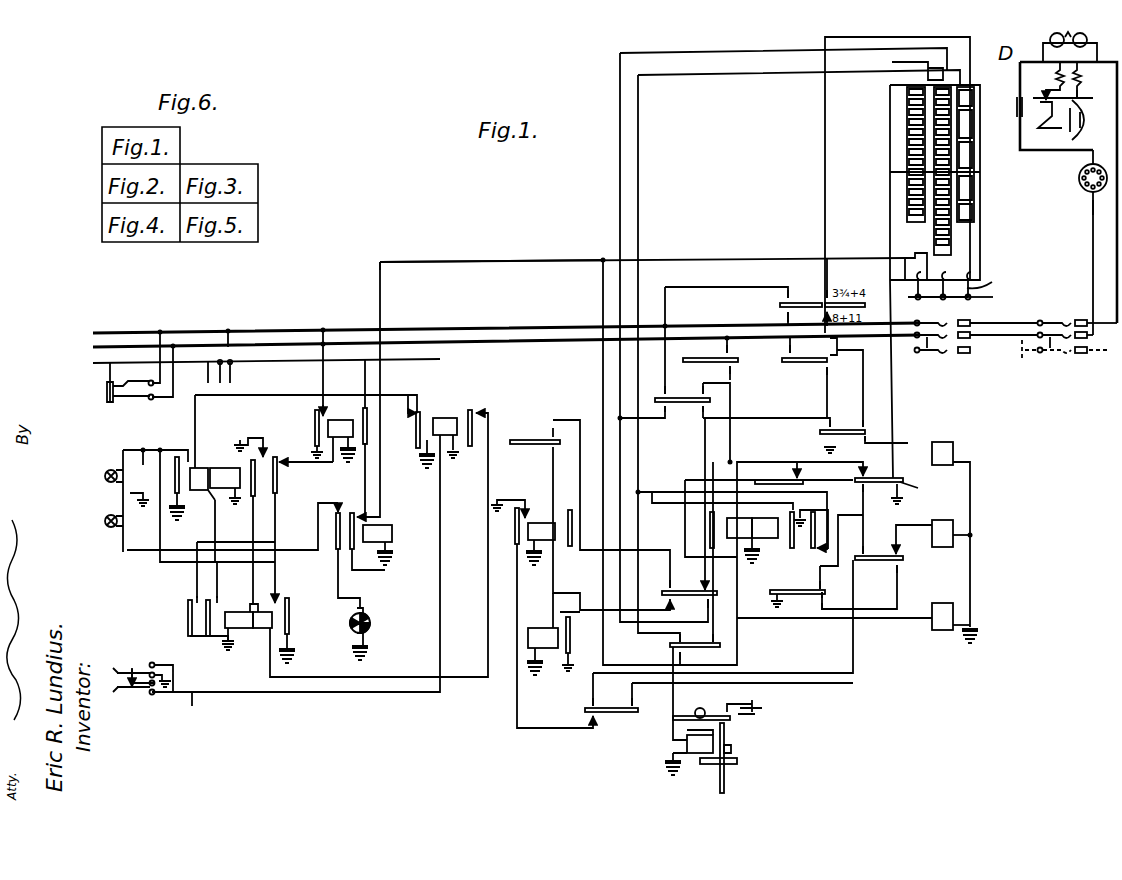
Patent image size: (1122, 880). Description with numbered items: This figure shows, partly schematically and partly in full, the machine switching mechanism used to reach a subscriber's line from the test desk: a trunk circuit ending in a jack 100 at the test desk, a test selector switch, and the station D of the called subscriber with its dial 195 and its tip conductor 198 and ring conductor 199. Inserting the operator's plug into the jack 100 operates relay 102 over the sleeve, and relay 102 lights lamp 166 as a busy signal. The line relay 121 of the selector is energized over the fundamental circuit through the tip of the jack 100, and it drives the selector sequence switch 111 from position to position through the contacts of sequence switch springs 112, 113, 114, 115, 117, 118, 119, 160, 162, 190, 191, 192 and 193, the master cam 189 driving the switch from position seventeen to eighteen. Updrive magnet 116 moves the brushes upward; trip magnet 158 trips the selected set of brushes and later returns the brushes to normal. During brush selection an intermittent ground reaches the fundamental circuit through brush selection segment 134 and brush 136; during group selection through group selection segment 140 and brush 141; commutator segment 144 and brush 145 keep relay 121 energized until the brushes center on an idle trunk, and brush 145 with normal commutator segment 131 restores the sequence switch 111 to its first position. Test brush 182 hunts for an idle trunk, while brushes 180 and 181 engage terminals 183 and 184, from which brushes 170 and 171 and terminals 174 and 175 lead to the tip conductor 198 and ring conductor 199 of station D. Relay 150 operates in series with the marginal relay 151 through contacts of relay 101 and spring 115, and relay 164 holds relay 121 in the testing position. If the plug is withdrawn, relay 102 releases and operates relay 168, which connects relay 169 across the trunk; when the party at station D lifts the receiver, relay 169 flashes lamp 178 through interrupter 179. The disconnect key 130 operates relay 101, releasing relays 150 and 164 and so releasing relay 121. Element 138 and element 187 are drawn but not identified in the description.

The jack 100 is at (112, 403).
The relay 101 is at (443, 413).
The relay 102 is at (215, 476).
The sequence switch 111 is at (687, 745).
The sequence switch spring 112 is at (798, 485).
The sequence switch spring 113 is at (672, 645).
The sequence switch spring 114 is at (872, 562).
The sequence switch spring 115 is at (519, 438).
The updrive magnet 116 is at (945, 547).
The sequence switch spring 117 is at (634, 714).
The sequence switch spring 118 is at (703, 598).
The sequence switch spring 119 is at (688, 396).
The line relay 121 is at (746, 519).
The disconnect key 130 is at (150, 696).
The normal commutator segment 131 is at (905, 256).
The brush selection segment 134 is at (952, 240).
The brush 136 is at (998, 276).
The relay 138 is at (932, 618).
The group selection segment 140 is at (975, 191).
The brush 141 is at (998, 296).
The commutator segment 144 is at (908, 196).
The brush 145 is at (917, 292).
The relay 150 is at (247, 630).
The marginal relay 151 is at (543, 542).
The trip magnet 158 is at (953, 452).
The sequence switch spring 160 is at (744, 356).
The sequence switch spring 162 is at (797, 596).
The relay 164 is at (538, 628).
The lamp 166 is at (109, 468).
The relay 168 is at (336, 420).
The relay 169 is at (386, 528).
The brush 170 is at (1051, 312).
The brush 171 is at (1048, 361).
The terminal 174 is at (1094, 312).
The terminal 175 is at (1074, 356).
The lamp 178 is at (110, 530).
The interrupter 179 is at (371, 619).
The brush 180 is at (936, 312).
The brush 181 is at (935, 365).
The test brush 182 is at (940, 357).
The terminal 183 is at (998, 312).
The terminal 184 is at (965, 354).
The conductor 187 is at (901, 66).
The master cam 189 is at (737, 721).
The sequence switch spring 190 is at (782, 305).
The sequence switch spring 191 is at (856, 482).
The sequence switch spring 192 is at (840, 430).
The sequence switch spring 193 is at (793, 364).
The dial 195 is at (1077, 242).
The tip conductor 198 is at (1093, 212).
The ring conductor 199 is at (1117, 241).